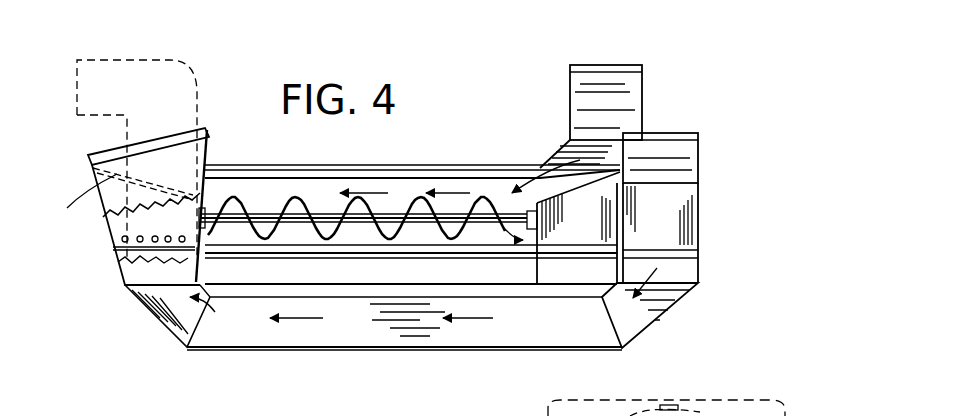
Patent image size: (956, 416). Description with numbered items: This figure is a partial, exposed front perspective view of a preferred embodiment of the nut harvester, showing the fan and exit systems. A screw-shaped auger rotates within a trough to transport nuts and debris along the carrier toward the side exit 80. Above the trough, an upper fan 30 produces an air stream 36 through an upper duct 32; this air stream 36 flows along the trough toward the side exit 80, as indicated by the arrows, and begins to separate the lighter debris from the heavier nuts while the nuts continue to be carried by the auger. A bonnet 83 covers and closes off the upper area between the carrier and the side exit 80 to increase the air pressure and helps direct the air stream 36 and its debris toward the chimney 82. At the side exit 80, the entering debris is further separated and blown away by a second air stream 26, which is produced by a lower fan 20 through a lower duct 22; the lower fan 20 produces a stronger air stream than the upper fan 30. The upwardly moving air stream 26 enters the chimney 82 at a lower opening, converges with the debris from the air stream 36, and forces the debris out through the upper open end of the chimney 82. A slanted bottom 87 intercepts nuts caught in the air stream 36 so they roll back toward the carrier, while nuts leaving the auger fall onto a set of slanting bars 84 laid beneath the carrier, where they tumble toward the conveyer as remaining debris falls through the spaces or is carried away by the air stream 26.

The lower fan 20 is at (683, 168).
The lower duct 22 is at (620, 307).
The air stream 26 is at (476, 322).
The upper fan 30 is at (632, 87).
The upper duct 32 is at (557, 158).
The air stream 36 is at (456, 190).
The side exit 80 is at (208, 97).
The chimney 82 is at (135, 60).
The bonnet 83 is at (88, 163).
The slanting bars 84 is at (140, 238).
The slanted bottom 87 is at (66, 208).